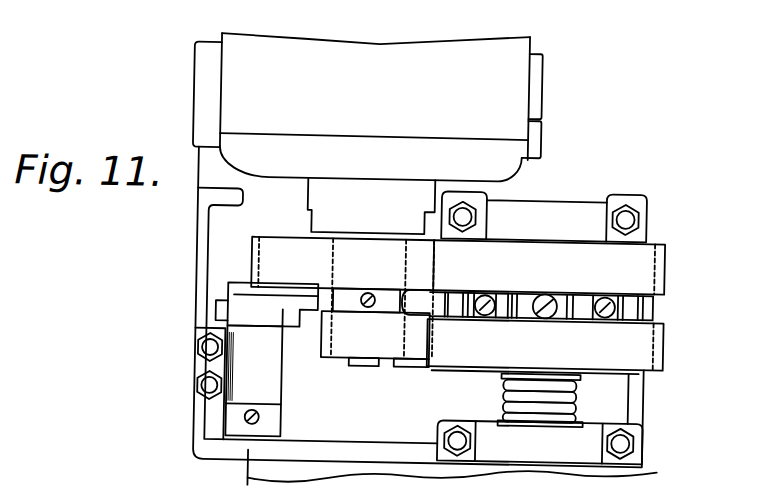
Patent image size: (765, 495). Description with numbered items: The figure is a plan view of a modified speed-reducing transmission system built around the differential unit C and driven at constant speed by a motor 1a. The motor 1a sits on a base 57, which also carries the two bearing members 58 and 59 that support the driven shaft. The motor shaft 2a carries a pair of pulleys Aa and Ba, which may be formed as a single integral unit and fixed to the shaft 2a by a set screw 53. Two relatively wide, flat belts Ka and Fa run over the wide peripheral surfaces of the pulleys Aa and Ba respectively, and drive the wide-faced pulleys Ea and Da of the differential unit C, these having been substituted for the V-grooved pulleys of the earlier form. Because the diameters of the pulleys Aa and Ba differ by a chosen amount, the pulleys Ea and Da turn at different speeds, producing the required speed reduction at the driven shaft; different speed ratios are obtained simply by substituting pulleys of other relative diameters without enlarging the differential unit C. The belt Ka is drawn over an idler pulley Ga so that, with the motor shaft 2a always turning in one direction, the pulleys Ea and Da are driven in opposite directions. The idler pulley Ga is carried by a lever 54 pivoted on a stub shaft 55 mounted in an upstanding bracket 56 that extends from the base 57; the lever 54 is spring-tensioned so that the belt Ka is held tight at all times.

The motor 1a is at (518, 90).
The base 57 is at (200, 177).
The bearing member 58 is at (583, 203).
The bearing member 59 is at (585, 454).
The idler pulley Ga is at (257, 240).
The belt Ka is at (647, 269).
The wide-faced pulley Ea is at (659, 242).
The differential unit C is at (654, 307).
The belt Fa is at (641, 354).
The wide-faced pulley Da is at (653, 368).
The pulley Aa is at (388, 298).
The set screw 53 is at (364, 307).
The motor shaft 2a is at (358, 371).
The pulley Ba is at (394, 366).
The lever 54 is at (253, 303).
The stub shaft 55 is at (249, 437).
The upstanding bracket 56 is at (199, 415).